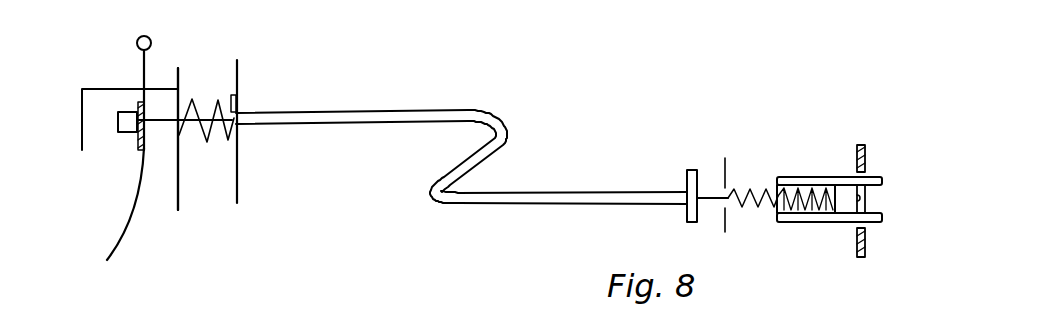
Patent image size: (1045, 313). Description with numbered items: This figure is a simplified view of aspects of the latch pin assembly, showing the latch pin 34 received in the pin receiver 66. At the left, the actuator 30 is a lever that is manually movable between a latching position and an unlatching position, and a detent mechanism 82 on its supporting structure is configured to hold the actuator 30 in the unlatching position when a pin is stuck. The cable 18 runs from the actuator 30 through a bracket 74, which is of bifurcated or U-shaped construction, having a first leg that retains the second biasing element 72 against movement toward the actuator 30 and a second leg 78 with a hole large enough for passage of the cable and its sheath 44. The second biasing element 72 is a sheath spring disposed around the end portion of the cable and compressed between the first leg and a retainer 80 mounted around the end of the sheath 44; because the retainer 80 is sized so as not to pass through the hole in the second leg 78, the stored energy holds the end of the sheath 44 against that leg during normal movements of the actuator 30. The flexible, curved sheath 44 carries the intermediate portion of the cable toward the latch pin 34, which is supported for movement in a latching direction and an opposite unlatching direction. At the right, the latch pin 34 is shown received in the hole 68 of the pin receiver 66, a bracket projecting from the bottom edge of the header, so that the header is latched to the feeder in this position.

The cable 18 is at (164, 120).
The actuator 30 is at (137, 197).
The latch pin 34 is at (883, 216).
The sheath 44 is at (538, 205).
The latch pin receiver 66 is at (857, 240).
The hole 68 is at (866, 175).
The second biasing element 72 is at (206, 135).
The bracket 74 is at (178, 187).
The second leg 78 is at (237, 187).
The retainer 80 is at (236, 100).
The detent mechanism 82 is at (82, 113).